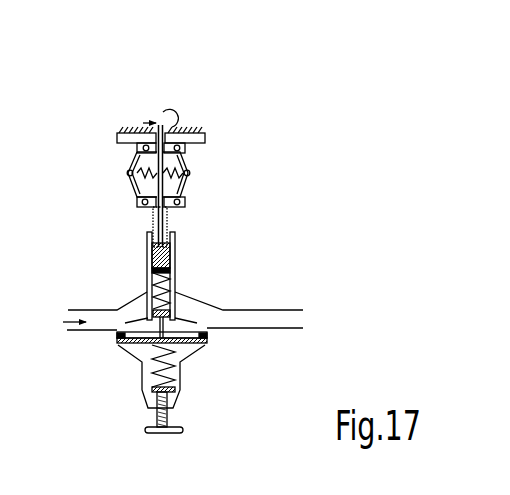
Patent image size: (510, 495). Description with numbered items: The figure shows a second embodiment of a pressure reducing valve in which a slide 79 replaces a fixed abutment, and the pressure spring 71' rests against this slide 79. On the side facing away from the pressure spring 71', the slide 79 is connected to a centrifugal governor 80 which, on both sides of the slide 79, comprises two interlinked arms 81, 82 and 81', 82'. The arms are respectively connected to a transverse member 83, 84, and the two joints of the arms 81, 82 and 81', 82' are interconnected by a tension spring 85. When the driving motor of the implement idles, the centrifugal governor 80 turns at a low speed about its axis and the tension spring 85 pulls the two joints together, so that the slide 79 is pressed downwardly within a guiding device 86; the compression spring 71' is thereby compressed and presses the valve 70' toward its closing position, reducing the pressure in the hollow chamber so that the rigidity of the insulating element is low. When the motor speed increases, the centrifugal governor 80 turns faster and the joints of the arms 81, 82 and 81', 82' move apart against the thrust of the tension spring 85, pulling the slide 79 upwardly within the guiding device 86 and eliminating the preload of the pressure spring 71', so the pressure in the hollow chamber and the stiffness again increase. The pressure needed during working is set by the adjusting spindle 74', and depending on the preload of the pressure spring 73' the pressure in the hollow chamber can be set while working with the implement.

The valve 70' is at (148, 362).
The pressure spring 71' is at (193, 286).
The pressure spring 73' is at (199, 368).
The adjusting spindle 74' is at (184, 420).
The slide 79 is at (167, 255).
The centrifugal governor 80 is at (120, 174).
The arm 81 is at (115, 166).
The arm 81' is at (215, 167).
The arm 82 is at (125, 197).
The arm 82' is at (216, 191).
The transverse member 83 is at (170, 145).
The transverse member 84 is at (150, 207).
The tension spring 85 is at (152, 158).
The guiding device 86 is at (150, 247).